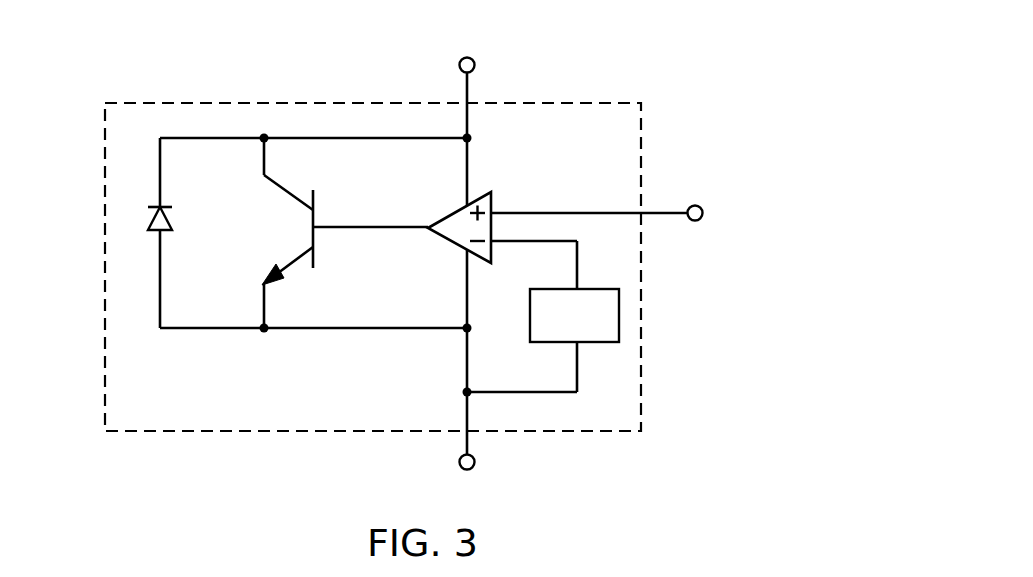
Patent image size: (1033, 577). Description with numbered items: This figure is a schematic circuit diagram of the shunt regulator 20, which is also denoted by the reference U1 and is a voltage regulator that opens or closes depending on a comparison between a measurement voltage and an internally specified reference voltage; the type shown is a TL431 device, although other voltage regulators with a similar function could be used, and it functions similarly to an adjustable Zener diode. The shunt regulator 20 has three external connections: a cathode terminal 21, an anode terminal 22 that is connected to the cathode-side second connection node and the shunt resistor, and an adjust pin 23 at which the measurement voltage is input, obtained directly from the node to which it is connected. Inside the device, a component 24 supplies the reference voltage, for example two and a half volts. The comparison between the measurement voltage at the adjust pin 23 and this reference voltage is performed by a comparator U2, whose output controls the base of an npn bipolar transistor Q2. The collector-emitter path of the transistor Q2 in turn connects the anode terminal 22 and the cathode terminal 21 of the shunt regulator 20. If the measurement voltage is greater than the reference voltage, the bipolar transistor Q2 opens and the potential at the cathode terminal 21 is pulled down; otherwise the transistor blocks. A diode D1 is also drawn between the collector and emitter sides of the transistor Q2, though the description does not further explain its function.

The shunt regulator 20 is at (457, 265).
The shunt regulator U1 is at (641, 167).
The cathode terminal 21 is at (476, 64).
The anode terminal 22 is at (470, 470).
The adjust pin 23 is at (697, 222).
The component 24 is at (619, 307).
The diode D1 is at (152, 223).
The npn bipolar transistor Q2 is at (316, 206).
The comparator U2 is at (458, 246).